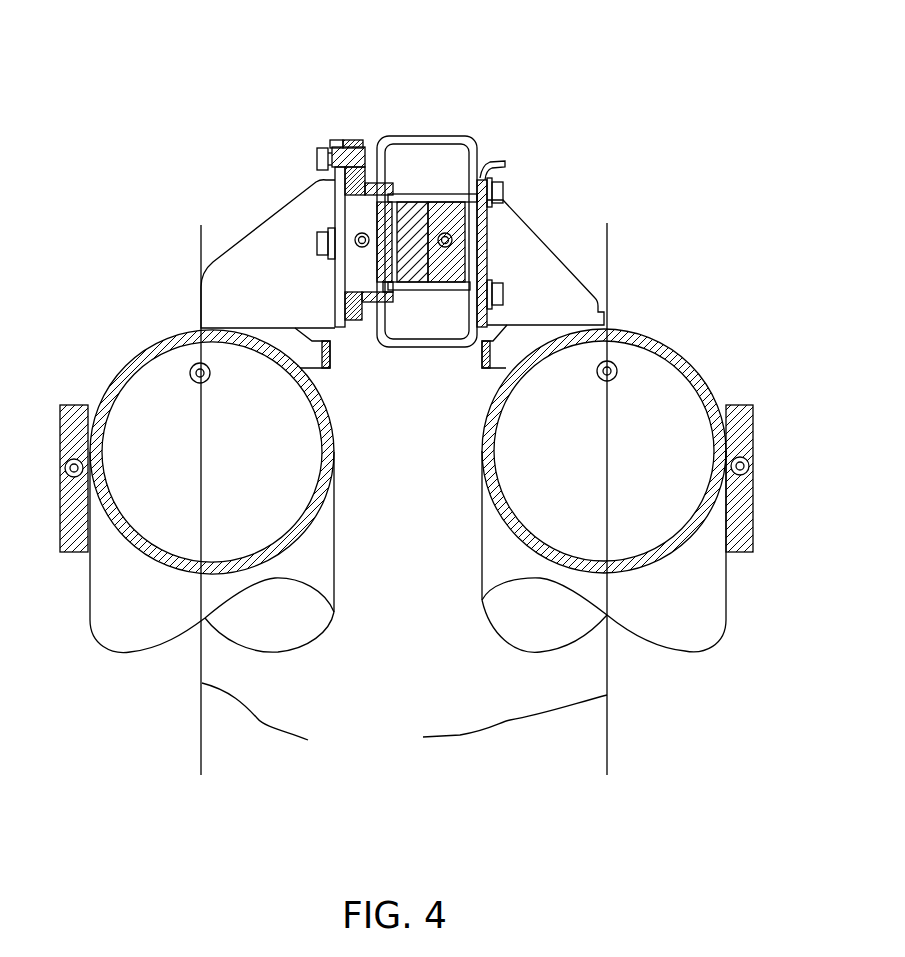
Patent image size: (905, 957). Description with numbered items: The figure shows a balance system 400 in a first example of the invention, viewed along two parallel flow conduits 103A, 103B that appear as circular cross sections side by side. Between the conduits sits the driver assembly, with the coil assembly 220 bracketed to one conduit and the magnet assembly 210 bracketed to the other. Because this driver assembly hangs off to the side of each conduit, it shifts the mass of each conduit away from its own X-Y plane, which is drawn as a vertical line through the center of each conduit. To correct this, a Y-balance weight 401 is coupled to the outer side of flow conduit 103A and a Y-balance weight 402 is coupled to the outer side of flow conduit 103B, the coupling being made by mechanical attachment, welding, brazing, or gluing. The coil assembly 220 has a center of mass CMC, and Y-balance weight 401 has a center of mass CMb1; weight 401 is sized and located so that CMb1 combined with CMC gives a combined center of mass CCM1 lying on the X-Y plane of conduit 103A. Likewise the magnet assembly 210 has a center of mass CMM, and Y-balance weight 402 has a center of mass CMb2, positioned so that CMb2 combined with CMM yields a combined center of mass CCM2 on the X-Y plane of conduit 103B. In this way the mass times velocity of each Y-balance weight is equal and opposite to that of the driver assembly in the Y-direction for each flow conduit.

The balance system 400 is at (113, 101).
The coil assembly 220 is at (278, 232).
The magnet assembly 210 is at (522, 226).
The Y-balance weight 401 is at (80, 418).
The Y-balance weight 402 is at (750, 438).
The flow conduit 103A is at (317, 557).
The flow conduit 103B is at (535, 605).
The coil assembly center of mass CMC is at (358, 233).
The magnet assembly center of mass CMM is at (444, 232).
The combined center of mass CCM1 is at (196, 364).
The combined center of mass CCM2 is at (614, 363).
The center of mass of Y-balance weight CMb1 is at (73, 477).
The center of mass of Y-balance weight CMb2 is at (743, 473).